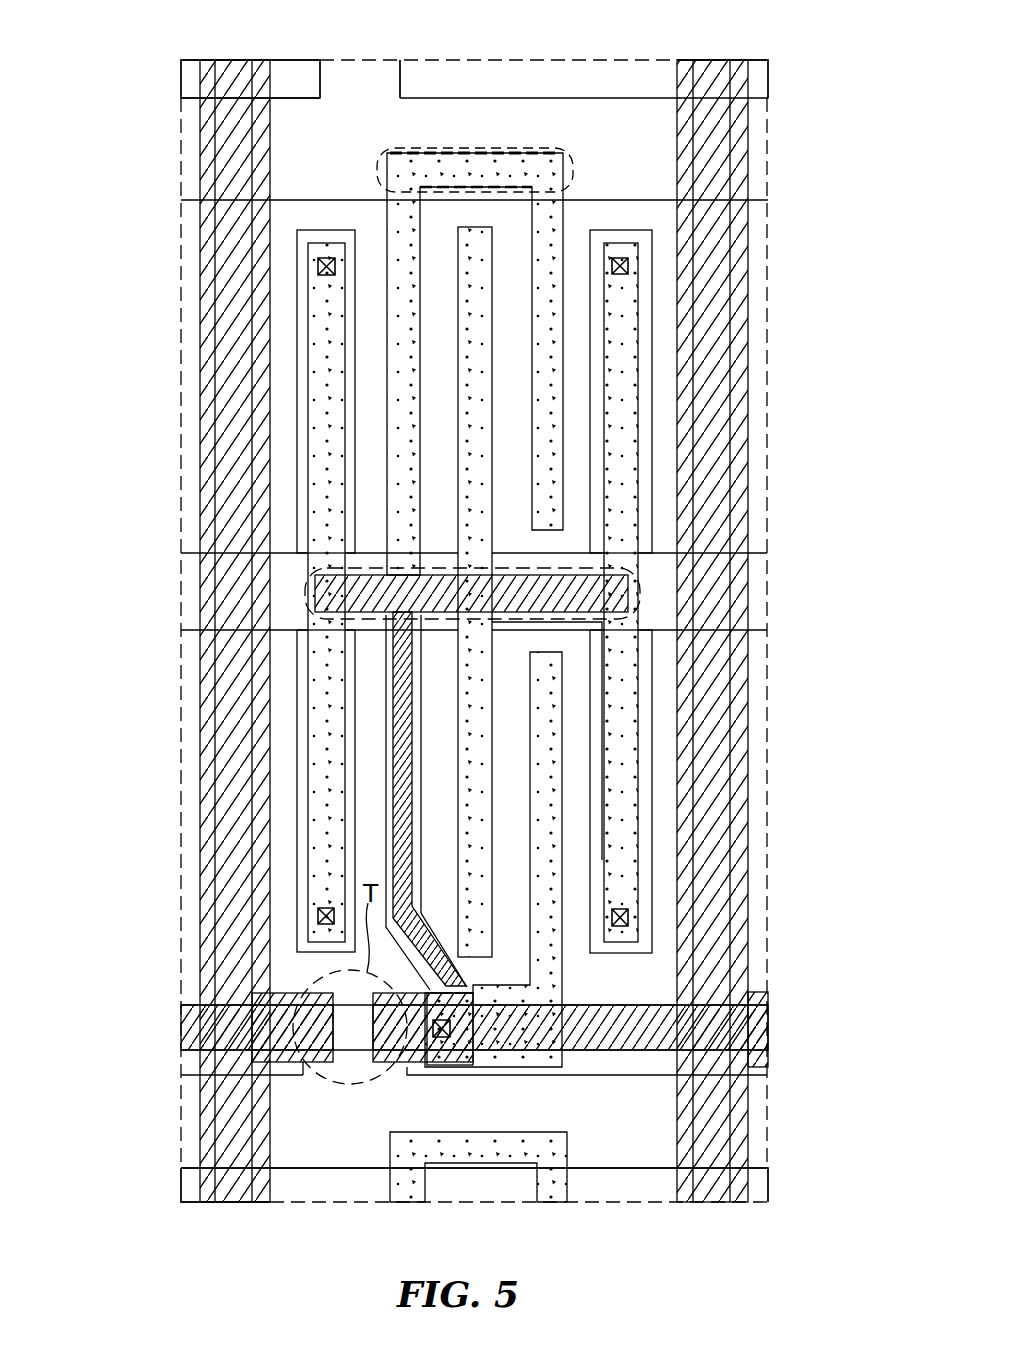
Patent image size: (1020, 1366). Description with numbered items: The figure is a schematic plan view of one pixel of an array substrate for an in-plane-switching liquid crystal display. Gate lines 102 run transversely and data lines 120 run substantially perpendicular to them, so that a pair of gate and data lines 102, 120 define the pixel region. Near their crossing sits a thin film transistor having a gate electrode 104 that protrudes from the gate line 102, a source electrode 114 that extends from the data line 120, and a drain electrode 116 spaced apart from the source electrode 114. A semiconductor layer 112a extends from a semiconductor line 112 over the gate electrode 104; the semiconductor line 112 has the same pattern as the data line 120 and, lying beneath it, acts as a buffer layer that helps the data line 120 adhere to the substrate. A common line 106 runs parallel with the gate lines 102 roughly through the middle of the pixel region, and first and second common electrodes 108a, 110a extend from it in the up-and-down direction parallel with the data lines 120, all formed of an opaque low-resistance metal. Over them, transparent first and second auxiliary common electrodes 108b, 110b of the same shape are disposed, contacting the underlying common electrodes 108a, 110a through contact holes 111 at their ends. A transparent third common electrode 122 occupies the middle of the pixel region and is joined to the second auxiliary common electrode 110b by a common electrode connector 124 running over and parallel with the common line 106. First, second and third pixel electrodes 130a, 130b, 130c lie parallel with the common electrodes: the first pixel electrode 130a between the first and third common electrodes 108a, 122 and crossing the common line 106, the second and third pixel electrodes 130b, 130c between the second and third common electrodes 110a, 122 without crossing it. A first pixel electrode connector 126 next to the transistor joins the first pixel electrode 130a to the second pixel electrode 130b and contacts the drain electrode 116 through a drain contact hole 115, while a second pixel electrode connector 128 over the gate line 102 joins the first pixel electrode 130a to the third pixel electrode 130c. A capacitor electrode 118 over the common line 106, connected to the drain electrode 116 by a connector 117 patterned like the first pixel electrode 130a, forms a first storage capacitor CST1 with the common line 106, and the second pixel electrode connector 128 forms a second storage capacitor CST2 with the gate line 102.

The gate line 102 is at (593, 100).
The gate electrode 104 is at (330, 978).
The common line 106 is at (193, 583).
The first common electrode 108a is at (308, 233).
The first auxiliary common electrode 108b is at (340, 247).
The second common electrode 110a is at (623, 238).
The second auxiliary common electrode 110b is at (647, 232).
The contact hole 111 is at (317, 264).
The semiconductor line 112 is at (228, 688).
The semiconductor layer 112a is at (352, 1045).
The source electrode 114 is at (310, 1068).
The drain contact hole 115 is at (441, 1028).
The drain electrode 116 is at (392, 1068).
The connector 117 is at (408, 793).
The capacitor electrode 118 is at (628, 594).
The data line 120 is at (203, 815).
The third common electrode 122 is at (483, 886).
The common electrode connector 124 is at (677, 553).
The first pixel electrode connector 126 is at (552, 1017).
The second pixel electrode connector 128 is at (523, 165).
The first pixel electrode 130a is at (398, 400).
The second pixel electrode 130b is at (545, 972).
The third pixel electrode 130c is at (558, 476).
The first storage capacitor CST1 is at (630, 606).
The second storage capacitor CST2 is at (473, 150).